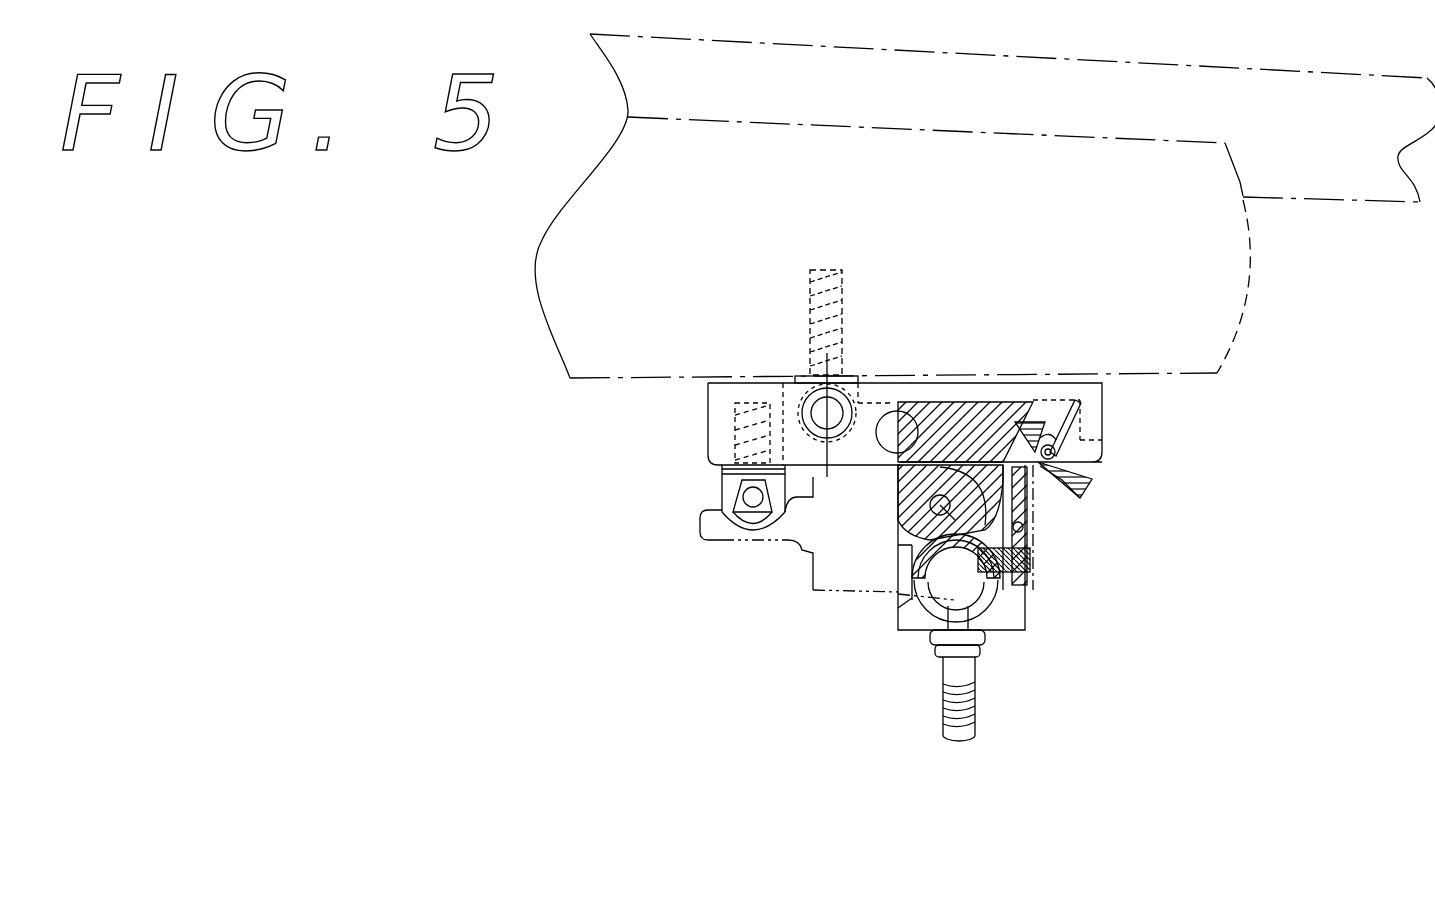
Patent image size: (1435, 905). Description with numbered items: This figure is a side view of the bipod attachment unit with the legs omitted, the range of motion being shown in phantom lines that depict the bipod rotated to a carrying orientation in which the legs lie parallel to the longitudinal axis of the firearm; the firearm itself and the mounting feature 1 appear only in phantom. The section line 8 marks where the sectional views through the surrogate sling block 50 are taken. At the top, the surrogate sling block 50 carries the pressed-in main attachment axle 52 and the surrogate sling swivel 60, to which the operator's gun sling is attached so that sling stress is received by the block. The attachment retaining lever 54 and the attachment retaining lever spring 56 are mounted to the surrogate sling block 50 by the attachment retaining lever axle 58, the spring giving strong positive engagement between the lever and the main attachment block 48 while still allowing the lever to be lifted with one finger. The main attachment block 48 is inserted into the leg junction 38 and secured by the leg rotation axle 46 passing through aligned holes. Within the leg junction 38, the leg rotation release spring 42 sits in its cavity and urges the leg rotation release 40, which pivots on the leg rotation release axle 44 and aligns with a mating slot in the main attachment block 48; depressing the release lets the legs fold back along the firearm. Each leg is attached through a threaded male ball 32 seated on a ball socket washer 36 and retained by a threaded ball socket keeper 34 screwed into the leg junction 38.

The screw 1 is at (832, 300).
The section line 8— 8 is at (860, 352).
The threaded male ball 32 is at (960, 677).
The threaded ball socket keeper 34 is at (898, 608).
The ball socket washer 36 is at (905, 547).
The leg junction 38 is at (1010, 630).
The leg rotation release 40 is at (1042, 540).
The leg rotation release spring 42 is at (1038, 542).
The leg rotation release axle 44 is at (1035, 530).
The leg rotation axle 46 is at (1035, 580).
The main attachment block 48 is at (1088, 490).
The surrogate sling block 50 is at (1088, 412).
The main attachment axle 52 is at (887, 432).
The attachment retaining lever 54 is at (1092, 478).
The attachment retaining lever spring 56 is at (1070, 440).
The attachment retaining lever axle 58 is at (1063, 462).
The surrogate sling swivel 60 is at (725, 485).